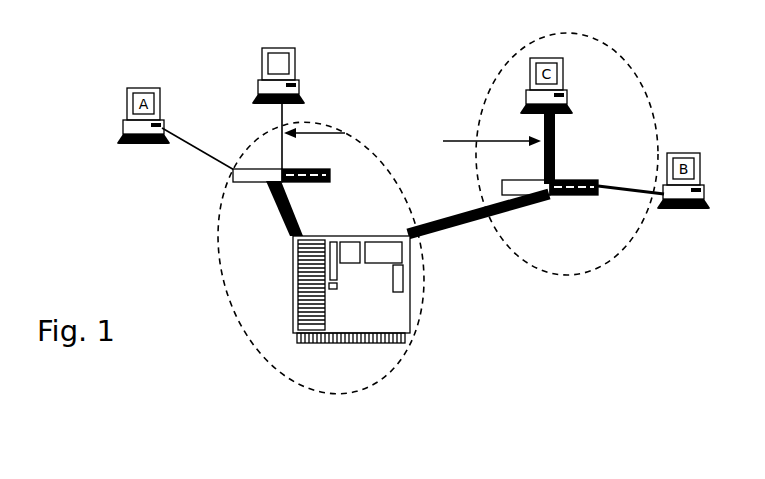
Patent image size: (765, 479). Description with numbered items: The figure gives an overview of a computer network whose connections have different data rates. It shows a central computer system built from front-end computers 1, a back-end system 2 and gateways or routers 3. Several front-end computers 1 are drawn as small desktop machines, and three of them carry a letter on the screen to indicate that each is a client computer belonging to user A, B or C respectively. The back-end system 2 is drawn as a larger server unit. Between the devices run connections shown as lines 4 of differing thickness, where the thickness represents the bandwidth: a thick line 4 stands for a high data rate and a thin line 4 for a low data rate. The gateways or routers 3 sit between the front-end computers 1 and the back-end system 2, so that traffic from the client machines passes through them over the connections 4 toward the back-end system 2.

The front-end computer 1 is at (287, 94).
The back-end system 2 is at (329, 289).
The gateway or router 3 is at (415, 180).
The connection line 4 is at (303, 216).